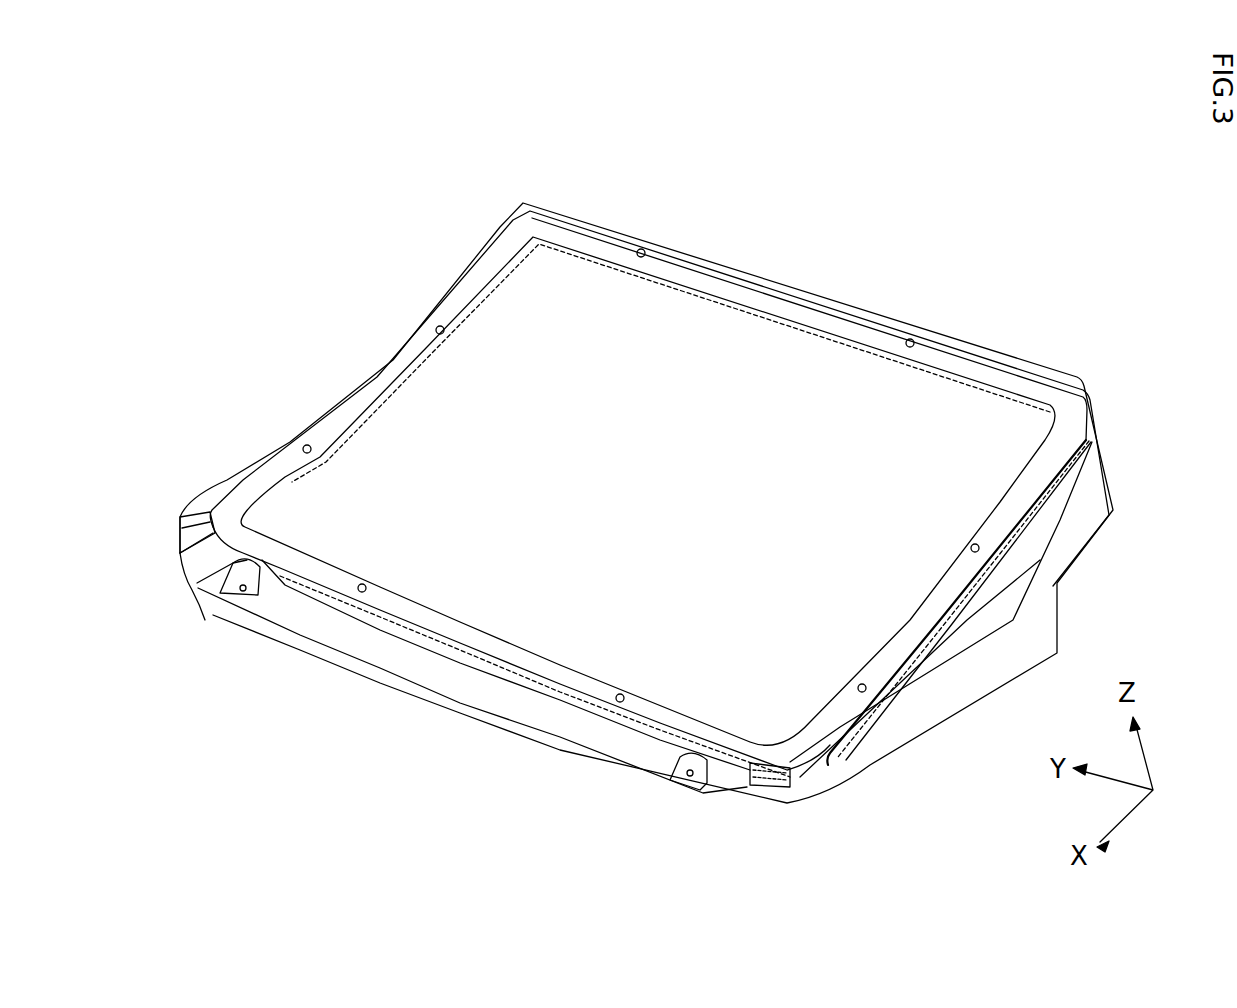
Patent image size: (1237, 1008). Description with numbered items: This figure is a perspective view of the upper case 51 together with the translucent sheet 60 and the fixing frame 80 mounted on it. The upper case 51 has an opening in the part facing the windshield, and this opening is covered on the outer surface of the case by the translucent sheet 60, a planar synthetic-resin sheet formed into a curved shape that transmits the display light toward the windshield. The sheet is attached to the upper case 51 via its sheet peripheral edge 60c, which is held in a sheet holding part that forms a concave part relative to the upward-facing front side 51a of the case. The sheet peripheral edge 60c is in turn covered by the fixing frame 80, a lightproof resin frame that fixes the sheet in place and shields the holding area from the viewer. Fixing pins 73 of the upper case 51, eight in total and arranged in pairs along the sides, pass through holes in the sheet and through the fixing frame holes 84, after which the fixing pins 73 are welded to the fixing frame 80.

The upper case 51 is at (793, 807).
The front side 51a is at (205, 620).
The translucent sheet 60 is at (722, 335).
The sheet peripheral edge 60c is at (592, 245).
The fixing pin 73 is at (433, 310).
The fixing frame 80 is at (828, 318).
The fixing frame hole 84 is at (440, 327).